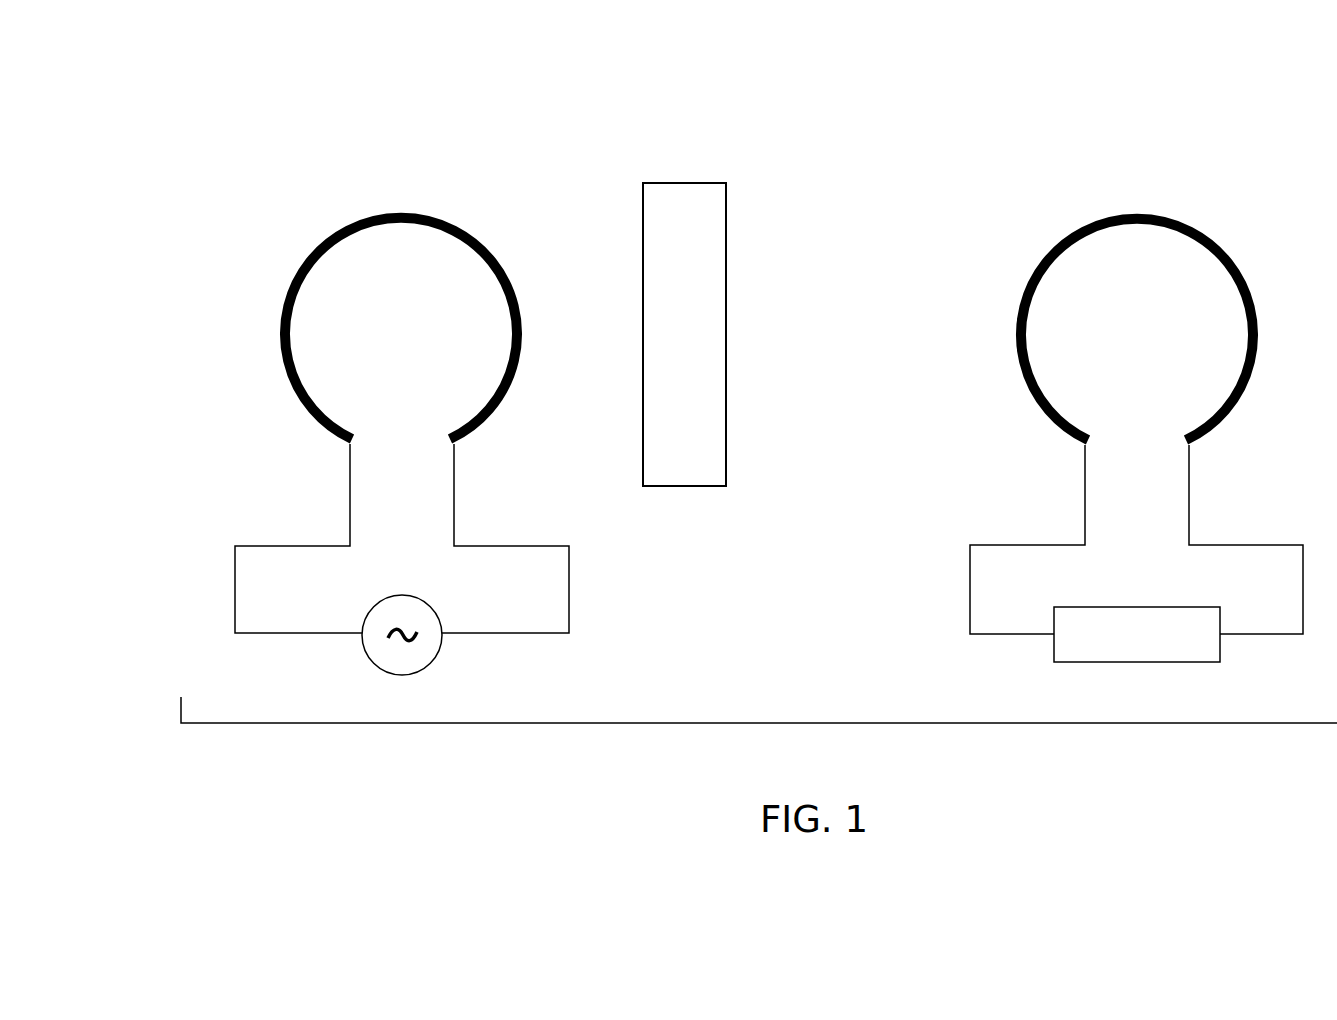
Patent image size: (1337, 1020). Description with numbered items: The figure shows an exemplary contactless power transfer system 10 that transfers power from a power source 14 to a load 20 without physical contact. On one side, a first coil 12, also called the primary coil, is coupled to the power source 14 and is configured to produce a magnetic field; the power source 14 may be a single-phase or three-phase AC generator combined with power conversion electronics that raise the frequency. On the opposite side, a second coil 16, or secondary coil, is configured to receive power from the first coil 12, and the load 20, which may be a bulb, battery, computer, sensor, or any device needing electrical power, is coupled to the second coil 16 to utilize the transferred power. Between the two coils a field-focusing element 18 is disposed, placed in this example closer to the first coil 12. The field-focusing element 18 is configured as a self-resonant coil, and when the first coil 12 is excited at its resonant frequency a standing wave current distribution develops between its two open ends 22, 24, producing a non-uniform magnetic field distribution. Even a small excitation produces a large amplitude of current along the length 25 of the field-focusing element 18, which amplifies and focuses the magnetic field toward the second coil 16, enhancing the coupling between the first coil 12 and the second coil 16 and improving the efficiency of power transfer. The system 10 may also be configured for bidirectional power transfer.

The contactless power transfer system 10 is at (309, 84).
The first coil 12 is at (483, 240).
The power source 14 is at (370, 612).
The second coil 16 is at (1238, 260).
The field-focusing element 18 is at (684, 183).
The load 20 is at (1054, 617).
The open end 22 is at (643, 398).
The open end 24 is at (726, 358).
The length 25 is at (703, 487).